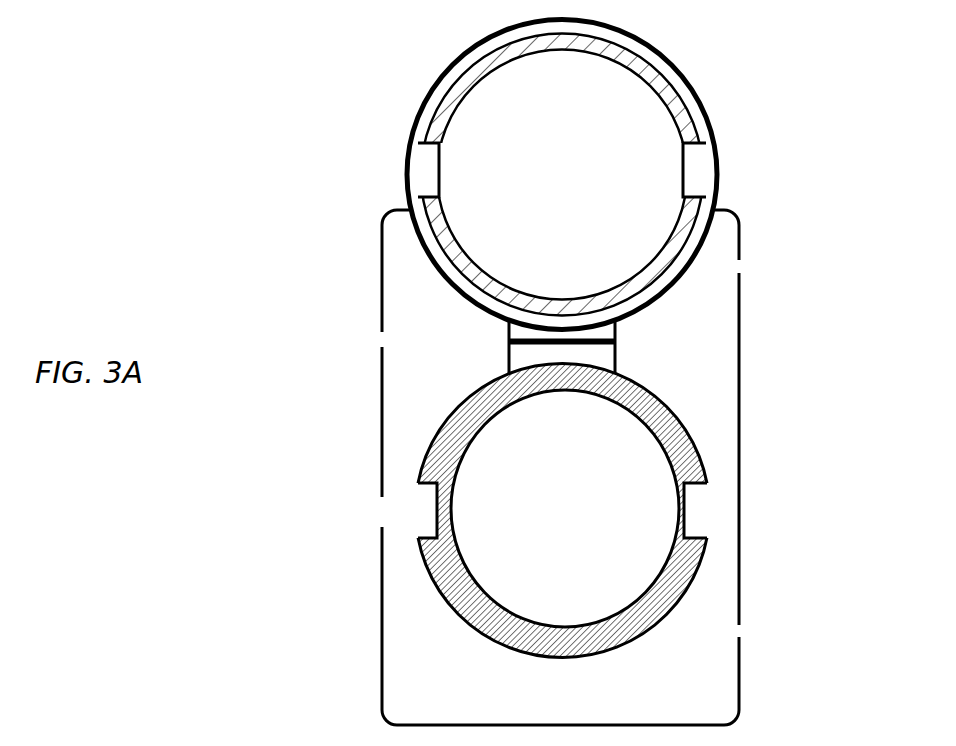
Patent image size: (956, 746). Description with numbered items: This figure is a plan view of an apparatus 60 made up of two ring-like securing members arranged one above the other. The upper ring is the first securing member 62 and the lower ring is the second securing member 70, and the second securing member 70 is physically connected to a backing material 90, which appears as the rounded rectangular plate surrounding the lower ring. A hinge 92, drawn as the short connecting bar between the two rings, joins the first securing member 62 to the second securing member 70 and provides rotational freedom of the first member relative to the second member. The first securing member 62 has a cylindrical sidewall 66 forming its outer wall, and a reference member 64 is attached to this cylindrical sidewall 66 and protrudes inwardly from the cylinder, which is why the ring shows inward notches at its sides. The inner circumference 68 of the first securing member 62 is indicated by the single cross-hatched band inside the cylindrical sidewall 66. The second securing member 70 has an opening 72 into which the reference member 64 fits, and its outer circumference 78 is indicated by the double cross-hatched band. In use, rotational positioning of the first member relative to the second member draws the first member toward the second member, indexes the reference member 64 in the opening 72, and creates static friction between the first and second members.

The apparatus 60 is at (845, 403).
The first securing member 62 is at (716, 97).
The reference member 64 is at (432, 167).
The cylindrical sidewall 66 is at (467, 44).
The inner circumference 68 is at (678, 262).
The second securing member 70 is at (678, 636).
The opening 72 is at (437, 503).
The outer circumference 78 is at (488, 640).
The backing material 90 is at (380, 667).
The hinge 92 is at (508, 350).